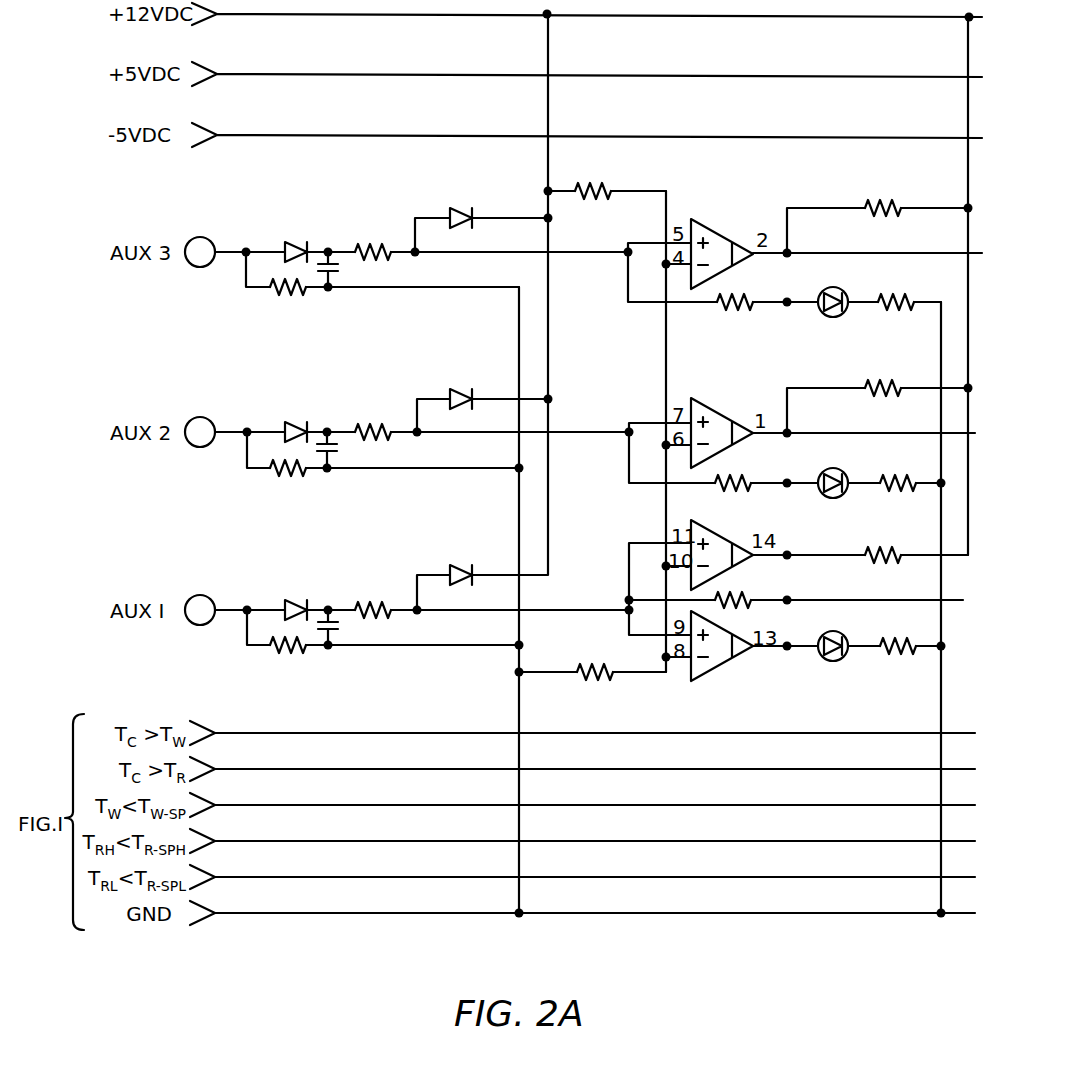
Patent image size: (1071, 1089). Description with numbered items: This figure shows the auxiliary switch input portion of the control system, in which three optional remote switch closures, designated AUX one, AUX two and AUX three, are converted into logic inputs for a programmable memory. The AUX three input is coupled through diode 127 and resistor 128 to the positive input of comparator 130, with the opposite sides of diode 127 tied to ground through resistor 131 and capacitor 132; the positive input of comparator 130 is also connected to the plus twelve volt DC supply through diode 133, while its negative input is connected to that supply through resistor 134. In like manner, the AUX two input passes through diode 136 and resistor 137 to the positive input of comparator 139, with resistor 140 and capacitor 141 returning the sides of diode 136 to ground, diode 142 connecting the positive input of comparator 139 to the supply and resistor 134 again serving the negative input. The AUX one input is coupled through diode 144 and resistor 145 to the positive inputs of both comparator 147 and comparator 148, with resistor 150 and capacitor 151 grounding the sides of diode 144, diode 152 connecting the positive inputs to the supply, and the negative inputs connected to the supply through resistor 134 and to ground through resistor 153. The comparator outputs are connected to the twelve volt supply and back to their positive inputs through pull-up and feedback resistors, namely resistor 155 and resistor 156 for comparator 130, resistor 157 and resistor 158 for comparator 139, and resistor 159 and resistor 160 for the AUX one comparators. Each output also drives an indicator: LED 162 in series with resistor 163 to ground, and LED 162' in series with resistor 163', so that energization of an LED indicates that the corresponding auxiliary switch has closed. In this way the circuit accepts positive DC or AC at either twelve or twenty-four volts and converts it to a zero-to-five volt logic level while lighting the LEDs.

The diode 127 is at (298, 242).
The resistor 128 is at (374, 242).
The resistor 131 is at (301, 298).
The capacitor 132 is at (337, 271).
The diode 133 is at (464, 207).
The resistor 134 is at (602, 187).
The comparator 130 is at (733, 237).
The resistor 155 is at (882, 204).
The resistor 156 is at (747, 282).
The resistor 157 is at (880, 387).
The diode 136 is at (298, 423).
The resistor 137 is at (374, 423).
The resistor 140 is at (306, 474).
The capacitor 141 is at (337, 450).
The diode 142 is at (464, 387).
The comparator 139 is at (730, 414).
The resistor 158 is at (743, 479).
The LED 162' is at (820, 499).
The resistor 163' is at (889, 466).
The diode 144 is at (298, 601).
The resistor 145 is at (374, 601).
The resistor 150 is at (303, 652).
The capacitor 151 is at (340, 628).
The diode 152 is at (464, 566).
The resistor 153 is at (584, 665).
The comparator 147 is at (724, 534).
The resistor 160 is at (754, 578).
The resistor 159 is at (876, 547).
The comparator 148 is at (741, 666).
The LED 162 is at (824, 665).
The resistor 163 is at (896, 668).